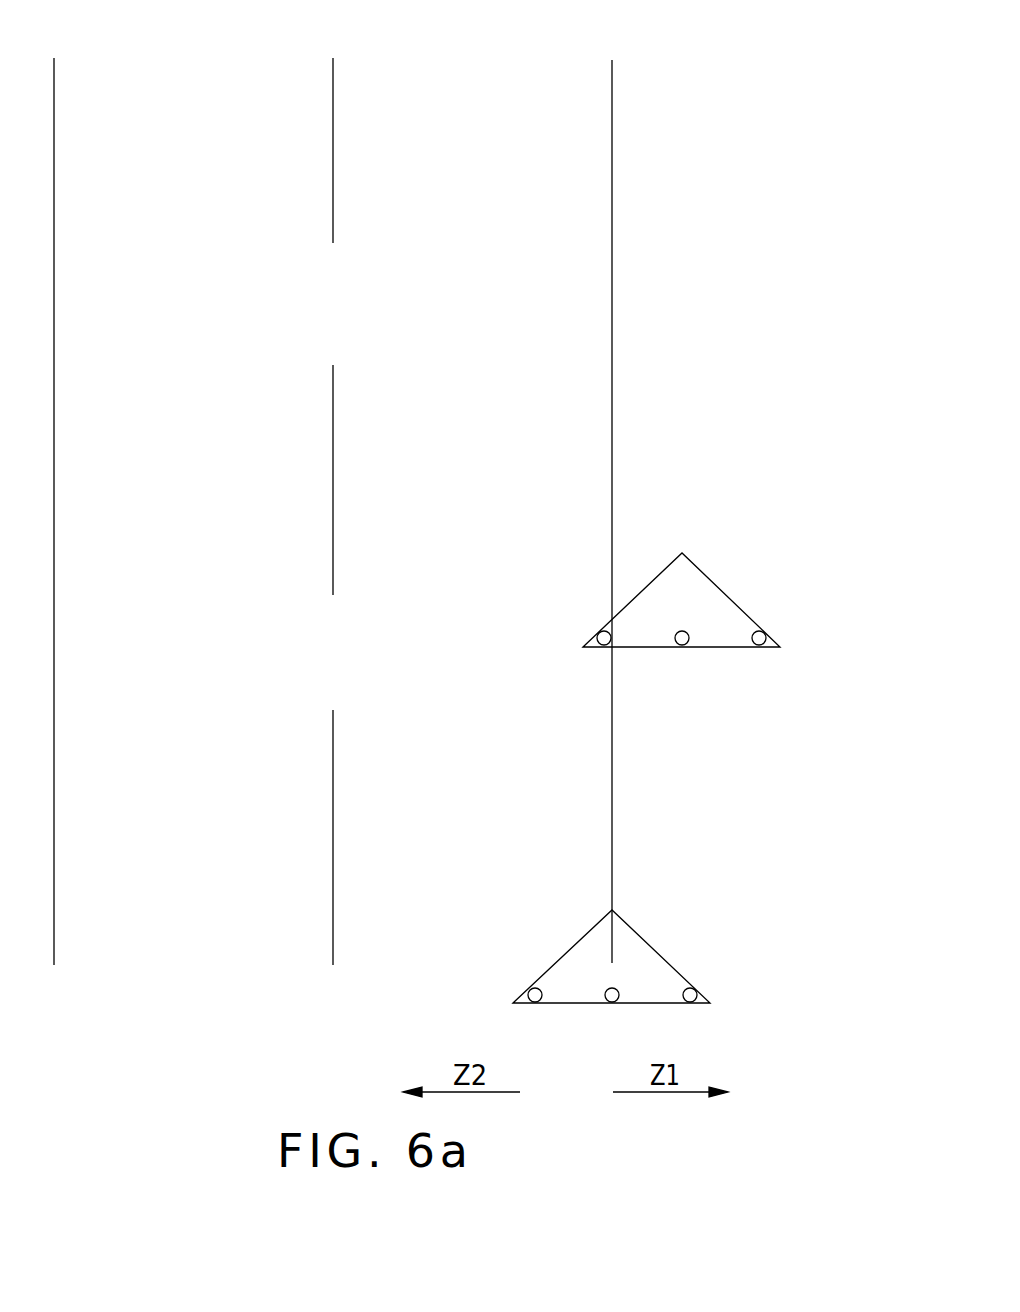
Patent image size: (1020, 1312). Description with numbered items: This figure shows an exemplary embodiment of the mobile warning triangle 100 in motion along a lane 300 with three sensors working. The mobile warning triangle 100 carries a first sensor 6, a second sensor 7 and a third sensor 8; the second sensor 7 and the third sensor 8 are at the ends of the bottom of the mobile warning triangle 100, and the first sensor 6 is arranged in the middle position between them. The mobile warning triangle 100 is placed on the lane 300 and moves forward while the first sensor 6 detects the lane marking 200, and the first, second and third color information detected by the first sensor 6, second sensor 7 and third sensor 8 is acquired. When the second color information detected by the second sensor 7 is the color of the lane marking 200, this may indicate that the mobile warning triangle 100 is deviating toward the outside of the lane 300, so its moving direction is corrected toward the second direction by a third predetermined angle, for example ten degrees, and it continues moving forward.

The lane 300 is at (492, 77).
The lane marking 200 is at (612, 145).
The mobile warning triangle 100 is at (702, 570).
The first sensor 6 is at (684, 648).
The second sensor 7 is at (600, 634).
The third sensor 8 is at (759, 636).